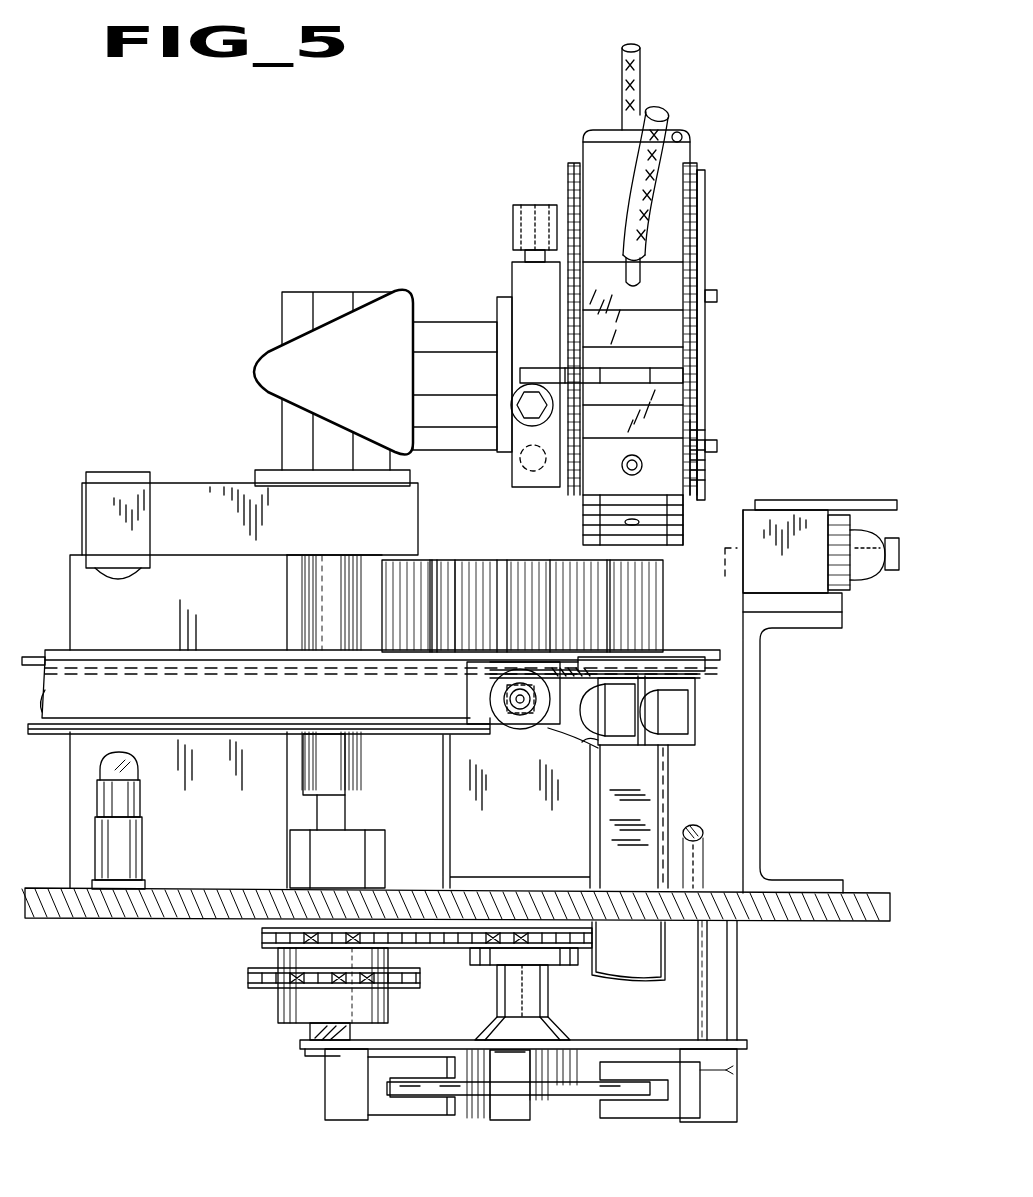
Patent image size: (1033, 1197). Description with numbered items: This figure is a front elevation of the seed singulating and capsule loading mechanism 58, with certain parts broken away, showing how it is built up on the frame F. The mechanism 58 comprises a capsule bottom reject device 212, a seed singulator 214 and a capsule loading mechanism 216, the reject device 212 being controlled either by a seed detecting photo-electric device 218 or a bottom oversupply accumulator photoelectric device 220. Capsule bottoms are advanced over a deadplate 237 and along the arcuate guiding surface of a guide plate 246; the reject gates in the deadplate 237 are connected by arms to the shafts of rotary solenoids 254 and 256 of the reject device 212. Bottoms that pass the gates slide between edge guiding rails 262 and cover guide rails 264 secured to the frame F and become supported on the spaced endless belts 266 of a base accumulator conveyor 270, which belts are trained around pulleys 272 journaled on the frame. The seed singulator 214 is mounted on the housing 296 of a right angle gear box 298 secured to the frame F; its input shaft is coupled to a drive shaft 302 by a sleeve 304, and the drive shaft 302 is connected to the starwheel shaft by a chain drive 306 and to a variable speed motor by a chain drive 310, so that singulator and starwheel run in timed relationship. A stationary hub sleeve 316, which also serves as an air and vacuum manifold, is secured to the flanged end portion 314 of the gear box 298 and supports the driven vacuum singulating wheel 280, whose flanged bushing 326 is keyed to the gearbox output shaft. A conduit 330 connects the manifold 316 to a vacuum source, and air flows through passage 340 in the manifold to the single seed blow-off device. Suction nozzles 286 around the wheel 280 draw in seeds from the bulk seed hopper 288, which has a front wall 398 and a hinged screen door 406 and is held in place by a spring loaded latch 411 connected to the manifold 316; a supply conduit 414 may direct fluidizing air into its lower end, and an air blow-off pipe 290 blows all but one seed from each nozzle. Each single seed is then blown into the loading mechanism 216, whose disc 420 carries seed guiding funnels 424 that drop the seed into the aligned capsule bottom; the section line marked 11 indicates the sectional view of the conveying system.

The seed singulating and capsule loading mechanism 58 is at (415, 165).
The hinged screen door 406 is at (608, 130).
The front wall 398 is at (592, 150).
The bulk seed hopper 288 is at (693, 160).
The conduit 330 is at (511, 230).
The stationary hub sleeve 316 is at (514, 275).
The flanged end portion 314 is at (503, 298).
The housing 296 is at (423, 326).
The air blow-off pipe 290 is at (645, 268).
The flanged bushing 326 is at (707, 316).
The seed singulator 214 is at (710, 337).
The right angle gear box 298 is at (346, 387).
The spring loaded latch 411 is at (520, 377).
The passage 340 is at (515, 462).
The supply conduit 414 is at (622, 470).
The vacuum singulating wheel 280 is at (585, 512).
The suction nozzle 286 is at (680, 510).
The capsule loading mechanism 216 is at (541, 558).
The seed guiding funnel 424 is at (456, 560).
The photo-electric device 218 is at (789, 502).
The section line 11- 11 is at (152, 655).
The base accumulator conveyor 270 is at (250, 652).
The edge guiding rail 262 is at (42, 652).
The cover guide rail 264 is at (58, 655).
The endless belt 266 is at (45, 686).
The disc 420 is at (435, 660).
The guide plate 246 is at (722, 662).
The deadplate 237 is at (705, 678).
The capsule bottom reject device 212 is at (698, 705).
The rotary solenoid 256 is at (685, 726).
The rotary solenoid 254 is at (512, 725).
The pulley 272 is at (562, 728).
The sleeve 304 is at (350, 790).
The drive shaft 302 is at (350, 832).
The bottom oversupply accumulator photoelectric device 220 is at (143, 820).
The frame F is at (100, 918).
The chain drive 306 is at (262, 942).
The chain drive 310 is at (248, 977).